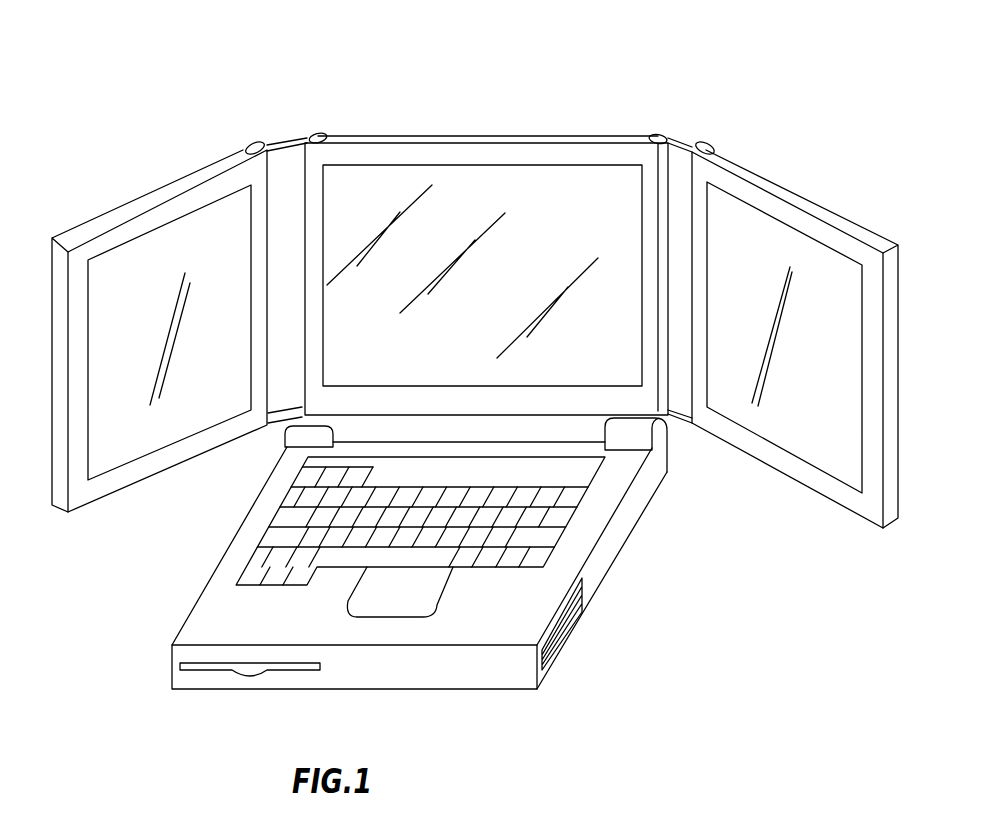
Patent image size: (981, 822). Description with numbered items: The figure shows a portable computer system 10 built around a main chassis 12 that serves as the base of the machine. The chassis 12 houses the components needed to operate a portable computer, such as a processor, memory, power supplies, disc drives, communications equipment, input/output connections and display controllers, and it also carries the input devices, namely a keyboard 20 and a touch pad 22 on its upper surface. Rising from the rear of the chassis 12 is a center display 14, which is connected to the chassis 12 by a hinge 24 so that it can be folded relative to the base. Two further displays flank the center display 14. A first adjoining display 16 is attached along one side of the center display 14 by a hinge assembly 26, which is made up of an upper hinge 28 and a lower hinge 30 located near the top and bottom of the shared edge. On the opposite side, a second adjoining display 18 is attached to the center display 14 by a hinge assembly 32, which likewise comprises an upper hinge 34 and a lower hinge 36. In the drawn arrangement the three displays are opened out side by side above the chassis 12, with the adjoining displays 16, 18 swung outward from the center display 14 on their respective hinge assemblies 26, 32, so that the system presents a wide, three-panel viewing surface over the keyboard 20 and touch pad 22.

The portable computer system 10 is at (625, 107).
The main chassis 12 is at (520, 607).
The center display 14 is at (495, 137).
The first adjoining display 16 is at (818, 200).
The second adjoining display 18 is at (108, 208).
The keyboard 20 is at (548, 515).
The touch pad 22 is at (392, 604).
The hinge 24 is at (287, 442).
The hinge assembly 26 is at (690, 128).
The upper hinge 28 is at (683, 137).
The lower hinge 30 is at (673, 423).
The hinge assembly 32 is at (281, 128).
The upper hinge 34 is at (297, 137).
The lower hinge 36 is at (283, 408).